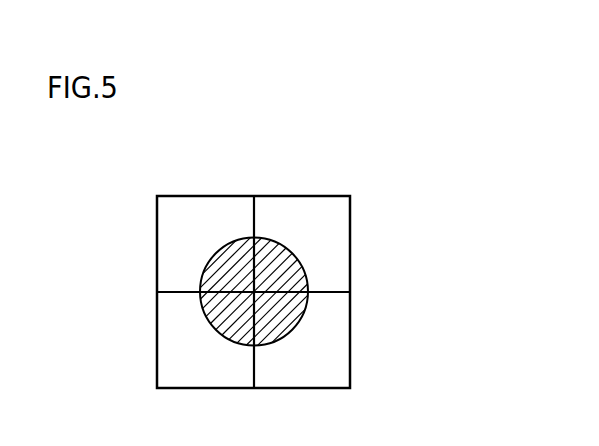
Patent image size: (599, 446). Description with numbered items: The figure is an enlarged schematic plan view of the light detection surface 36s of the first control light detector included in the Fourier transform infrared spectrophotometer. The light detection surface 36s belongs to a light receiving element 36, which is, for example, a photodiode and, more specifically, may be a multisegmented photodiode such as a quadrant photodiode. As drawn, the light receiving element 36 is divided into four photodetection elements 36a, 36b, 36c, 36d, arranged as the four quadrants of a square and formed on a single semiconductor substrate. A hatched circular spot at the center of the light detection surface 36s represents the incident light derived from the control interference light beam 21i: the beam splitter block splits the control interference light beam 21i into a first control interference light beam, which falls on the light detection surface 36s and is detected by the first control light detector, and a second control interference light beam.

The light receiving element 36 is at (348, 179).
The photodetection element 36a is at (299, 212).
The photodetection element 36b is at (201, 212).
The photodetection element 36c is at (306, 373).
The photodetection element 36d is at (207, 373).
The light detection surface 36s is at (352, 292).
The control interference light beam 21i is at (303, 267).